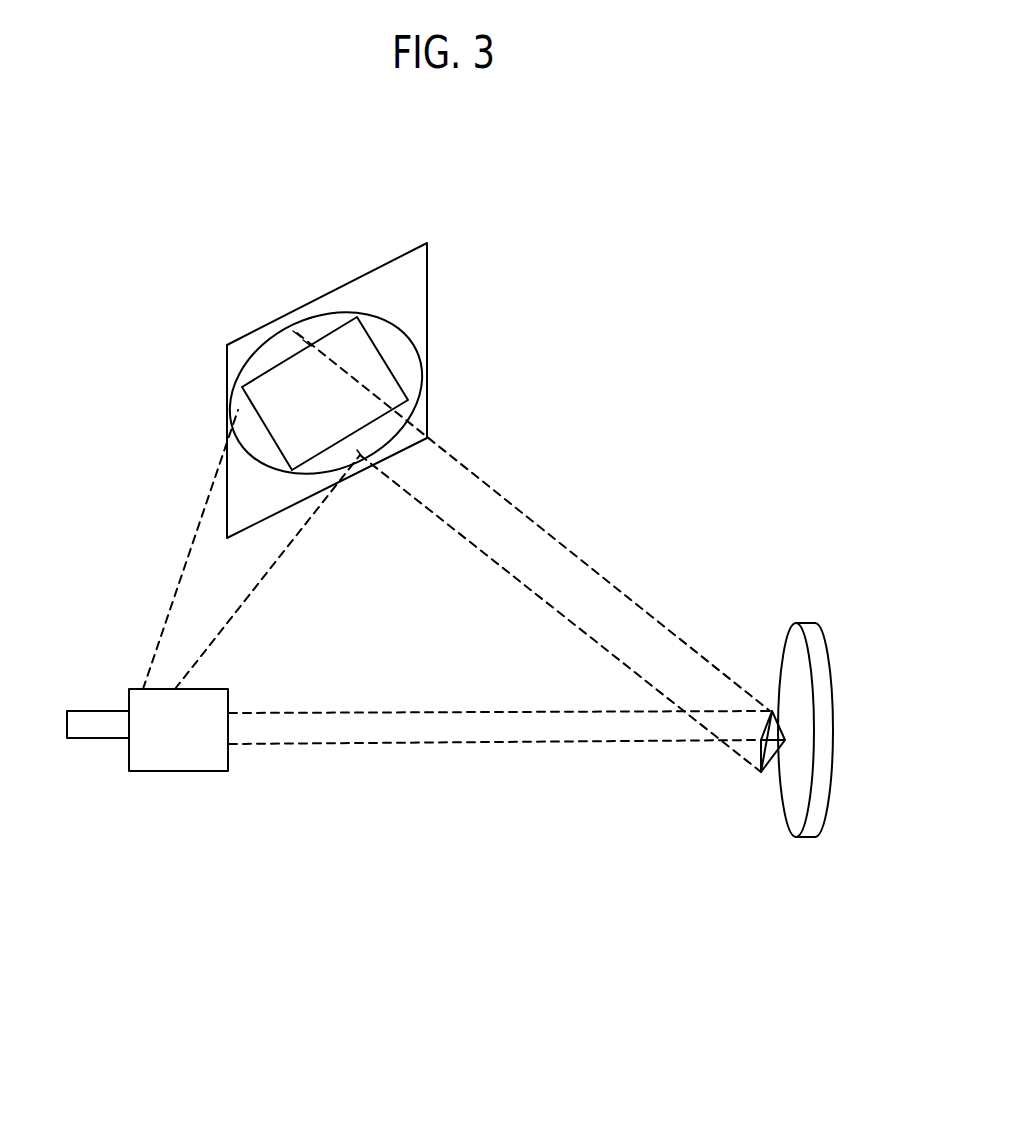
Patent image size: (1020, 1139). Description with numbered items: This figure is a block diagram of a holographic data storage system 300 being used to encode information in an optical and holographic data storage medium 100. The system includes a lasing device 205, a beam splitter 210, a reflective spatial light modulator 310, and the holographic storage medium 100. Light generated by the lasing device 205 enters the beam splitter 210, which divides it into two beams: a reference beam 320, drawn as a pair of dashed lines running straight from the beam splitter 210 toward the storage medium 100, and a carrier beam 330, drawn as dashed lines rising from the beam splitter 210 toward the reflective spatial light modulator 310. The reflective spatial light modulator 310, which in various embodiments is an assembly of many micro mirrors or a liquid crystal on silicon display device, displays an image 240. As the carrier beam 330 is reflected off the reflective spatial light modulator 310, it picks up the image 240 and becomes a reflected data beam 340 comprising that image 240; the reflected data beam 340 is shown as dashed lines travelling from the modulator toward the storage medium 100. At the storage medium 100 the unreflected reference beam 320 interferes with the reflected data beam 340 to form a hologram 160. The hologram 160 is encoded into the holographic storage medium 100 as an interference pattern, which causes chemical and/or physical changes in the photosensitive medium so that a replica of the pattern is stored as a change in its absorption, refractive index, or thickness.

The holographic storage medium 100 is at (812, 866).
The hologram 160 is at (785, 742).
The lasing device 205 is at (97, 735).
The beam splitter 210 is at (182, 755).
The image 240 is at (388, 368).
The holographic data storage system 300 is at (402, 849).
The reflective spatial light modulator 310 is at (427, 299).
The reference beam 320 is at (400, 732).
The carrier beam 330 is at (250, 578).
The reflected data beam 340 is at (487, 497).